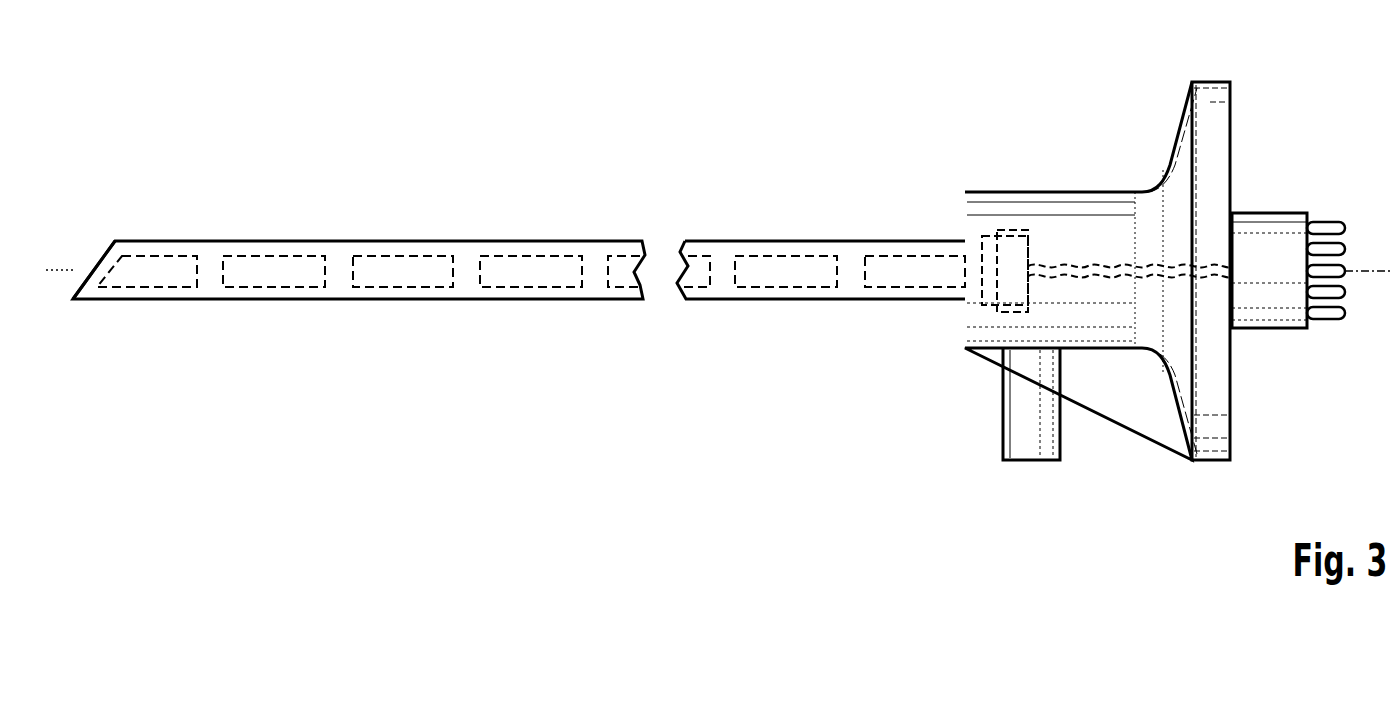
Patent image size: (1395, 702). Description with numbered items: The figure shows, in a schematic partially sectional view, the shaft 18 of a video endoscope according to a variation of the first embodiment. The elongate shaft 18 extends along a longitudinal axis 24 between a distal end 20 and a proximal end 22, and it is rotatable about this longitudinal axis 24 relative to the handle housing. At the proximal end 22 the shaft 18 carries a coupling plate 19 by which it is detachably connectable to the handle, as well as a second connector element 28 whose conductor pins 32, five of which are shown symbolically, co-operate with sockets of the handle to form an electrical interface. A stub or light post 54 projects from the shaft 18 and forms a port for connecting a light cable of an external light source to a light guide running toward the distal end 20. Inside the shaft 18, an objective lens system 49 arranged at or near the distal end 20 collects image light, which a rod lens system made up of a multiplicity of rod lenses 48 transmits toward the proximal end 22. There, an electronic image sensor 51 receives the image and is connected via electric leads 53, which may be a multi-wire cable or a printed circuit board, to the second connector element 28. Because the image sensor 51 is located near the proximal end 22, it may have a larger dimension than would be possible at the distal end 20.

The shaft 18 is at (502, 362).
The coupling plate 19 is at (1212, 81).
The distal end 20 is at (109, 308).
The proximal end 22 is at (1305, 336).
The longitudinal axis 24 is at (73, 268).
The second connector element 28 is at (1284, 203).
The conductor pins 32 is at (1331, 227).
The rod lenses 48 is at (273, 255).
The objective lens system 49 is at (157, 255).
The electronic image sensor 51 is at (1010, 229).
The electric leads 53 is at (1060, 263).
The light post 54 is at (1020, 436).